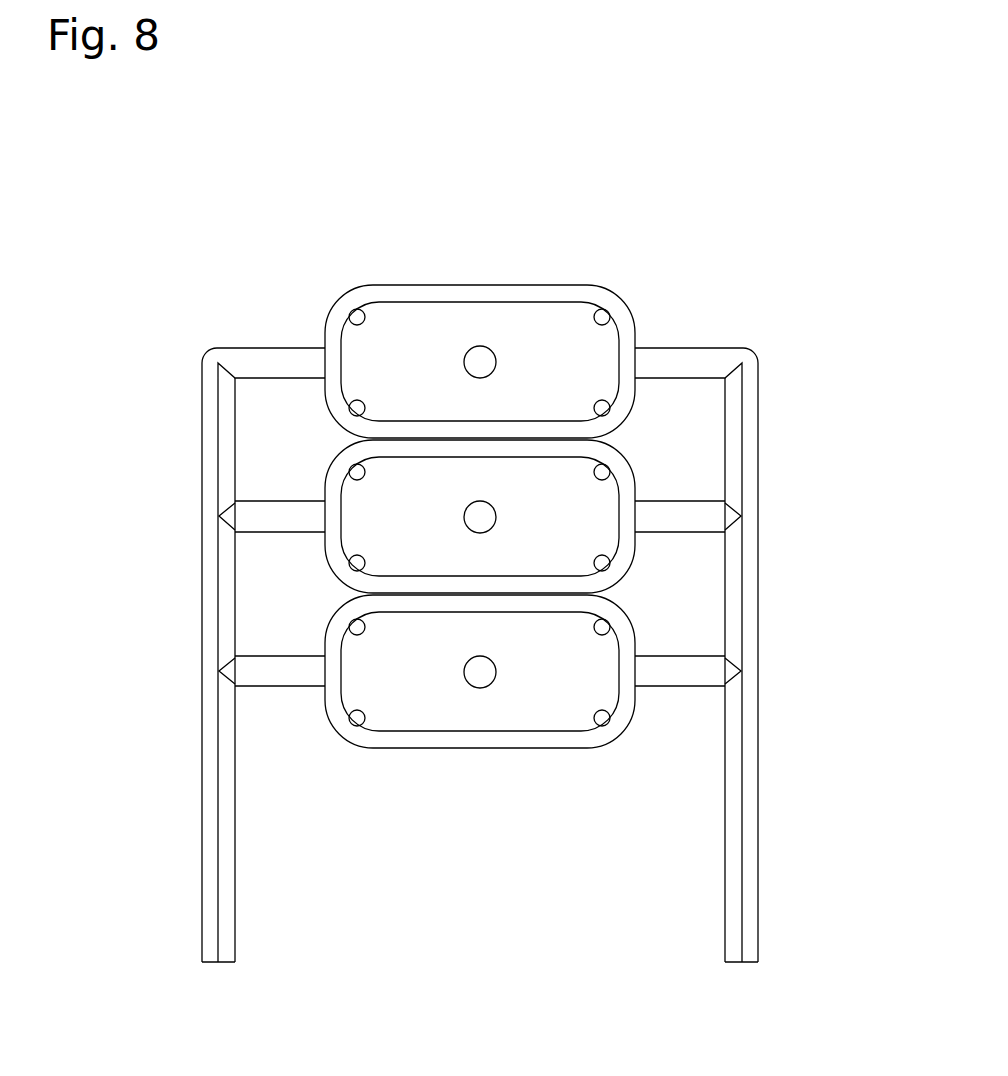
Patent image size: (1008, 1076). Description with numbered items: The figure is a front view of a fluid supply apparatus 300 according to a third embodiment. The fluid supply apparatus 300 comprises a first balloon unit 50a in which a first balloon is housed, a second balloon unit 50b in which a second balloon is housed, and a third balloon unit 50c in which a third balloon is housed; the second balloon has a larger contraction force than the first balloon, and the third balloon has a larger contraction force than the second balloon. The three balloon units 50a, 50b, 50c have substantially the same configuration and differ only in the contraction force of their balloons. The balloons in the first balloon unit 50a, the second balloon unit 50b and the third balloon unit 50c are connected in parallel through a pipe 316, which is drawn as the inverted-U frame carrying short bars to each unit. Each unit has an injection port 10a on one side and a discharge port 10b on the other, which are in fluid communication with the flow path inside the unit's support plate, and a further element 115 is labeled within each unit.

The fluid supply apparatus 300 is at (742, 323).
The pipe 316 is at (222, 807).
The injection port 10a is at (325, 364).
The discharge port 10b is at (693, 378).
The first balloon unit 50a is at (455, 317).
The second balloon unit 50b is at (537, 490).
The third balloon unit 50c is at (525, 675).
The cell housing plate 115 is at (548, 352).